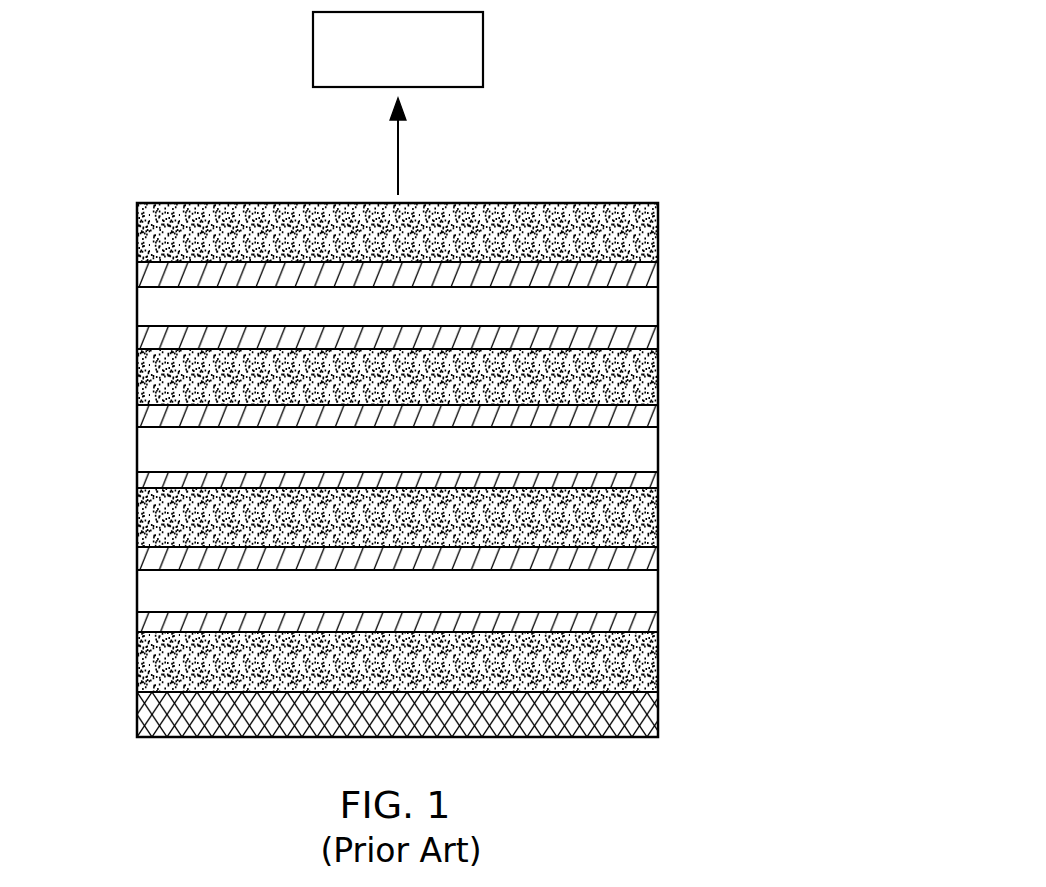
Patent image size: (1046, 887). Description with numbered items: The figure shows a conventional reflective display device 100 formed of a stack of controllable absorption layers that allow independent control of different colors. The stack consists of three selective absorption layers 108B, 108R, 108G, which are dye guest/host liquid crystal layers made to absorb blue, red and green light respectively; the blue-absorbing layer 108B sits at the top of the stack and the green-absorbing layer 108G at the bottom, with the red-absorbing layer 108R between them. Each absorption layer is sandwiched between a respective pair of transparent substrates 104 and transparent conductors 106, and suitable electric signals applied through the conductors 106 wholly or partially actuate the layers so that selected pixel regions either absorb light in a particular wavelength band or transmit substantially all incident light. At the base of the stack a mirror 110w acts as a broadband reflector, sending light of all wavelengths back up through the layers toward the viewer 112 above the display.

The conventional display device 100 is at (118, 164).
The transparent substrate 104 is at (658, 228).
The transparent conductor 106 is at (658, 270).
The blue-absorbing layer 108B is at (137, 305).
The red-absorbing layer 108R is at (137, 448).
The green-absorbing layer 108G is at (137, 590).
The mirror 110w is at (137, 710).
The viewer 112 is at (381, 74).